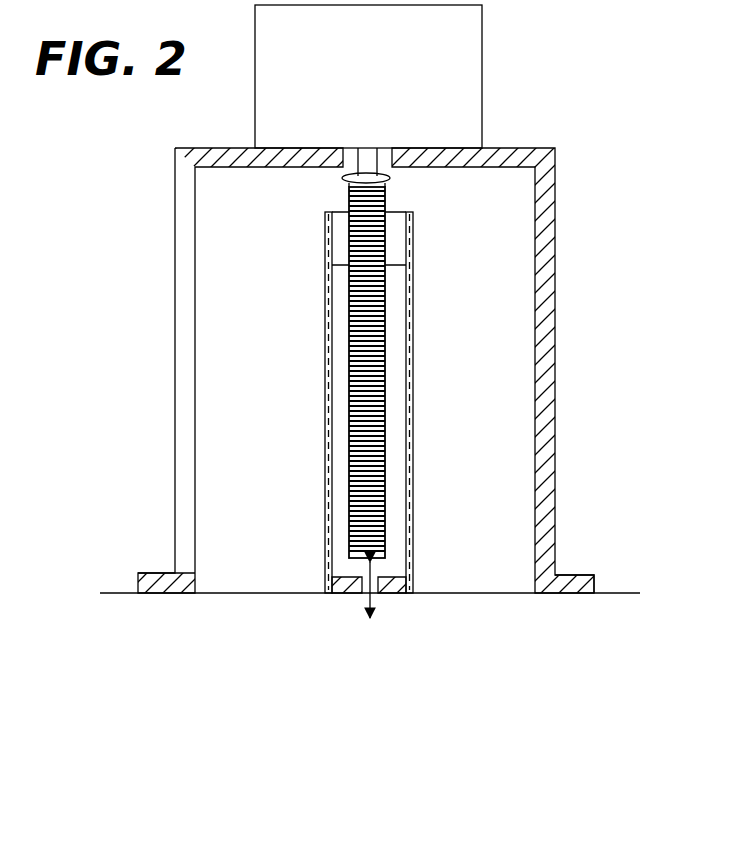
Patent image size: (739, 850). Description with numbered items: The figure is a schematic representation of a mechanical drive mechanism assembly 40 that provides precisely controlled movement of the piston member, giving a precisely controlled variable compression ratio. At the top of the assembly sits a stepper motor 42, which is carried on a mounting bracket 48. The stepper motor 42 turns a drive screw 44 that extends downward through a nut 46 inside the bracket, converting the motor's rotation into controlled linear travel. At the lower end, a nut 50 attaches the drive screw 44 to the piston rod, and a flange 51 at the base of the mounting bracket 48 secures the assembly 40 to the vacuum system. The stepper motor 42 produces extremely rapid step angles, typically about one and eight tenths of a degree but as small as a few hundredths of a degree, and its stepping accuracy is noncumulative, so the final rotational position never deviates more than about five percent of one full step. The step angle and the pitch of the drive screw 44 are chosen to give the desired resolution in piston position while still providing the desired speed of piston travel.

The mechanical drive mechanism assembly 40 is at (587, 111).
The stepper motor 42 is at (486, 77).
The drive screw 44 is at (389, 200).
The nut 46 is at (397, 248).
The mounting bracket 48 is at (559, 204).
The nut 50 is at (376, 602).
The flange 51 is at (597, 589).